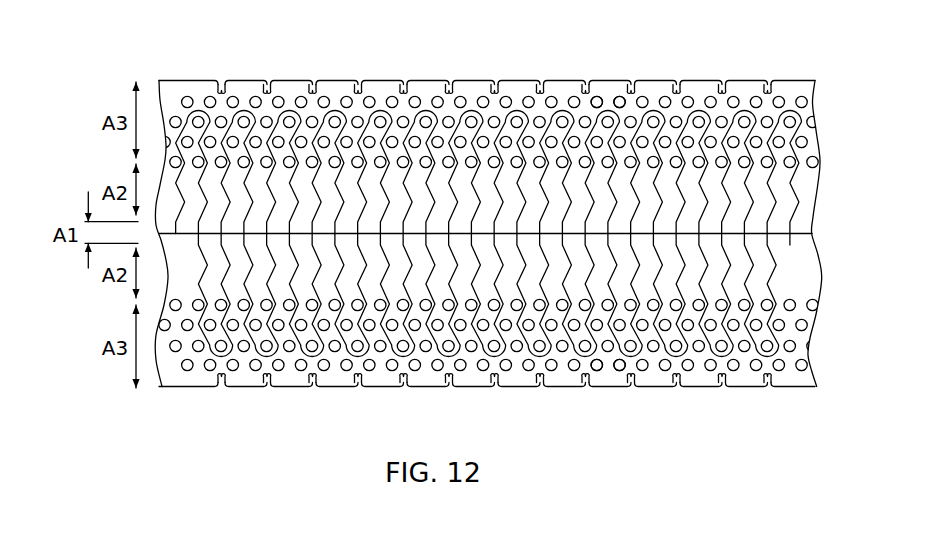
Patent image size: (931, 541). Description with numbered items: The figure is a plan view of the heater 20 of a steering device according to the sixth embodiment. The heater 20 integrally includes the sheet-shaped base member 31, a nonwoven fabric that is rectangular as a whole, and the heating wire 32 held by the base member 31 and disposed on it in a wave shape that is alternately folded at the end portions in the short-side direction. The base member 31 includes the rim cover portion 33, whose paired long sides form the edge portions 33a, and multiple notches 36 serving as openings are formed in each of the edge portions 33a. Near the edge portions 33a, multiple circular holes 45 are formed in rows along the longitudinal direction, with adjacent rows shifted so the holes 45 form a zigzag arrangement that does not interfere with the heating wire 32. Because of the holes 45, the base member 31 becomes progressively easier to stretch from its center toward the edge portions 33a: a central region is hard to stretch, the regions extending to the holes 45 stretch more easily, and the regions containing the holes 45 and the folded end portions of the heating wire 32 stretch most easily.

The heater 20 is at (694, 60).
The base member 31 is at (427, 80).
The heating wire 32 is at (797, 191).
The rim cover portion 33 is at (517, 80).
The edge portions 33a is at (380, 80).
The notches 36 is at (266, 89).
The holes 45 is at (618, 96).